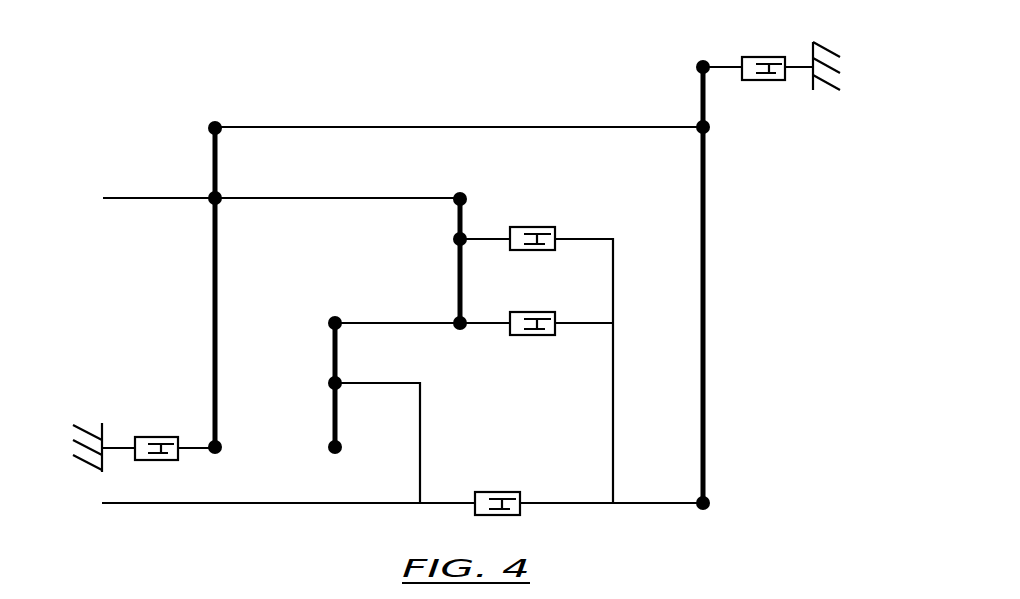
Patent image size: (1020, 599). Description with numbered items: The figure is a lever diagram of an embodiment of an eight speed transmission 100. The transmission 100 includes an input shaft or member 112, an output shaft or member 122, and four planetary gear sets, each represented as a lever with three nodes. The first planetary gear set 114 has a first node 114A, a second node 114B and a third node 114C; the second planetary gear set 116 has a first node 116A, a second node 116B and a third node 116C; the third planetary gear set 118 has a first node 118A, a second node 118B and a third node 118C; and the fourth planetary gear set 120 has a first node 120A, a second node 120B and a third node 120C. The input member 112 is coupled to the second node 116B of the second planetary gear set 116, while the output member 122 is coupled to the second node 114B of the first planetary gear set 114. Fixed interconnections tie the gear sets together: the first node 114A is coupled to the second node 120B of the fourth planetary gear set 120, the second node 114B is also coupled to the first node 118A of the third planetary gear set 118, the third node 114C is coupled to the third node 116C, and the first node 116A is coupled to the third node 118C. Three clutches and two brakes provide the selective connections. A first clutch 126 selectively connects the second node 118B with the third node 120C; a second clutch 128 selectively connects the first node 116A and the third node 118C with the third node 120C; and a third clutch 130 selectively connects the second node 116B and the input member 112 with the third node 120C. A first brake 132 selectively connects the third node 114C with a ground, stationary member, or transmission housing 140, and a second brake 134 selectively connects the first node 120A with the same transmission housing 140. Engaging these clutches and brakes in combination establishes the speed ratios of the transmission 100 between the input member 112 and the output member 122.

The eight speed transmission 100 is at (430, 101).
The input shaft or member 112 is at (160, 504).
The first planetary gear set 114 is at (227, 282).
The first node of the first planetary gear set 114A is at (222, 125).
The second node of the first planetary gear set 114B is at (221, 197).
The third node of the first planetary gear set 114C is at (221, 450).
The second planetary gear set 116 is at (318, 365).
The first node of the second planetary gear set 116A is at (330, 318).
The second node of the second planetary gear set 116B is at (328, 380).
The third node of the second planetary gear set 116C is at (293, 427).
The third planetary gear set 118 is at (455, 287).
The first node of the third planetary gear set 118A is at (455, 239).
The second node of the third planetary gear set 118B is at (466, 200).
The third node of the third planetary gear set 118C is at (455, 320).
The fourth planetary gear set 120 is at (701, 285).
The first node of the fourth planetary gear set 120A is at (697, 69).
The second node of the fourth planetary gear set 120B is at (711, 130).
The third node of the fourth planetary gear set 120C is at (711, 503).
The output shaft or member 122 is at (207, 198).
The first clutch 126 is at (548, 228).
The second clutch 128 is at (540, 338).
The third clutch 130 is at (488, 491).
The first brake 132 is at (150, 436).
The second brake 134 is at (752, 82).
The transmission housing 140 is at (835, 88).